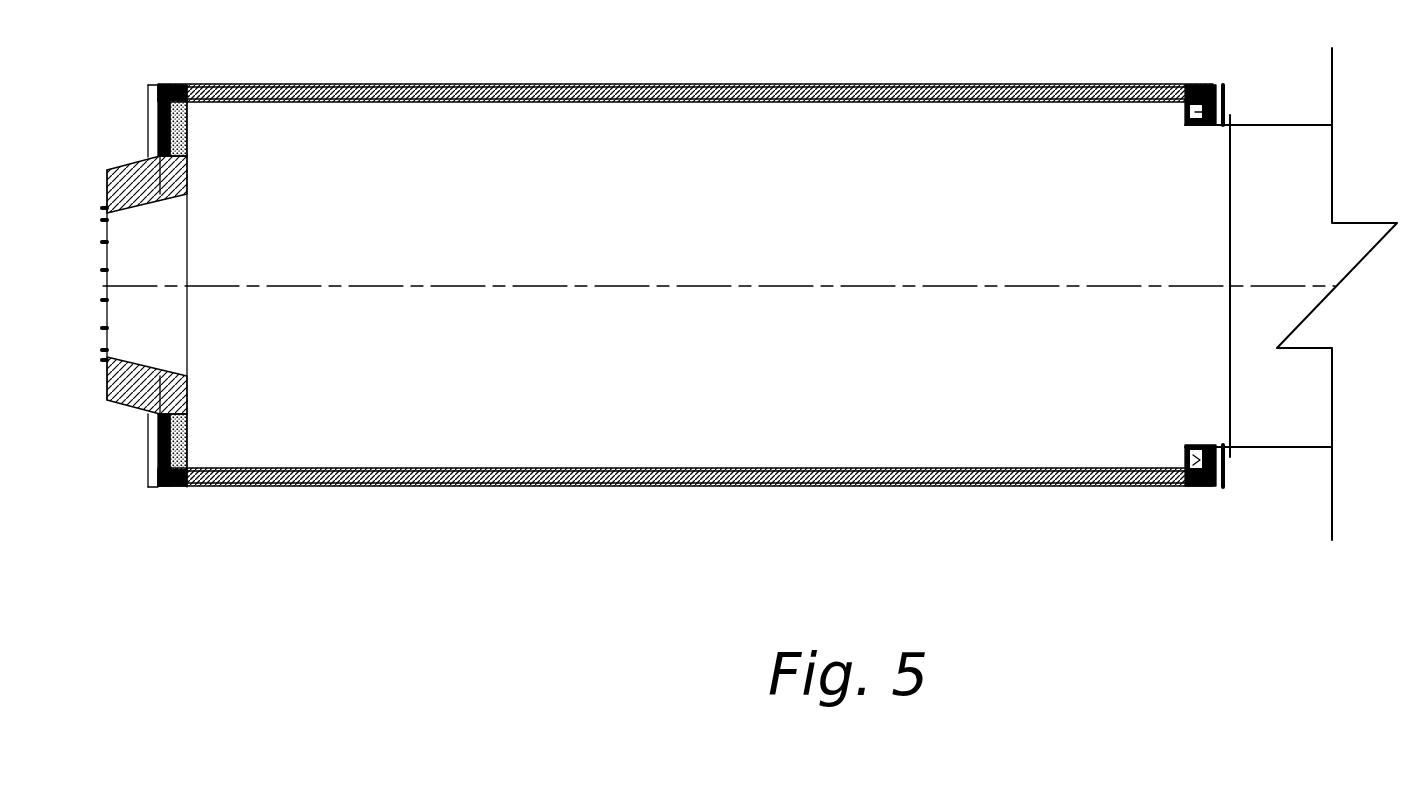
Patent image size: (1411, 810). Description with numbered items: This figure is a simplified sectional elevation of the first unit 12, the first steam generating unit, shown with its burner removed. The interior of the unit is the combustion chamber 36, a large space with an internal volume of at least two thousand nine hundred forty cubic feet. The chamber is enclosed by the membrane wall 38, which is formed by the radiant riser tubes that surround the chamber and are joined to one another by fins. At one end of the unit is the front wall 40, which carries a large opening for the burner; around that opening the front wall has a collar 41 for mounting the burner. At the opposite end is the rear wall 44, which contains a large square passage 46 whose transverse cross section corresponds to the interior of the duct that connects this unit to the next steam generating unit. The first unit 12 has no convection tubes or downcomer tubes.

The first unit 12 is at (736, 300).
The combustion chamber 36 is at (592, 238).
The membrane wall 38 is at (513, 100).
The front wall 40 is at (150, 458).
The collar 41 is at (113, 403).
The rear wall 44 is at (1208, 444).
The square passage 46 is at (1209, 125).